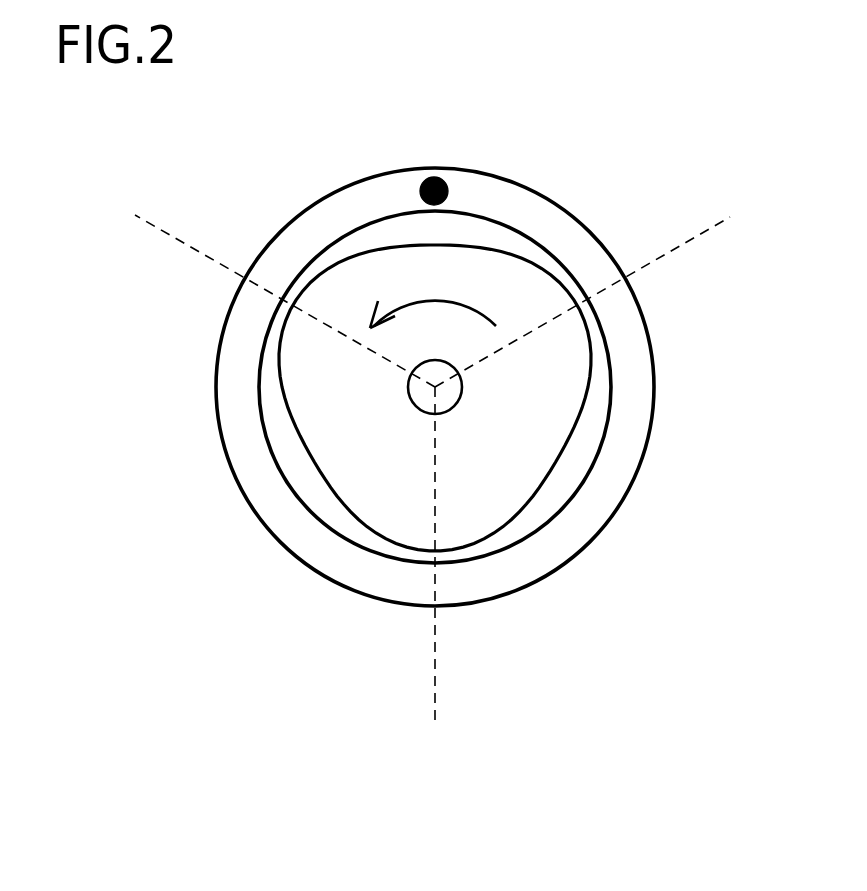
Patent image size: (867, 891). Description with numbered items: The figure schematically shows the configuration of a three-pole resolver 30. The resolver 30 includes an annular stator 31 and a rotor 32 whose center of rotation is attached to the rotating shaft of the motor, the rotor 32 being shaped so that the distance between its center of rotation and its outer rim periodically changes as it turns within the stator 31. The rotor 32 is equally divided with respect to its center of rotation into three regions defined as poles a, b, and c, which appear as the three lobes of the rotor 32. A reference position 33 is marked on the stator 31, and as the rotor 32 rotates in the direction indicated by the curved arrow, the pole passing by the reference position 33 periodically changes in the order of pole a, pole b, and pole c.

The three-pole resolver 30 is at (461, 100).
The annular stator 31 is at (650, 332).
The rotor 32 is at (340, 503).
The reference position 33 is at (420, 185).